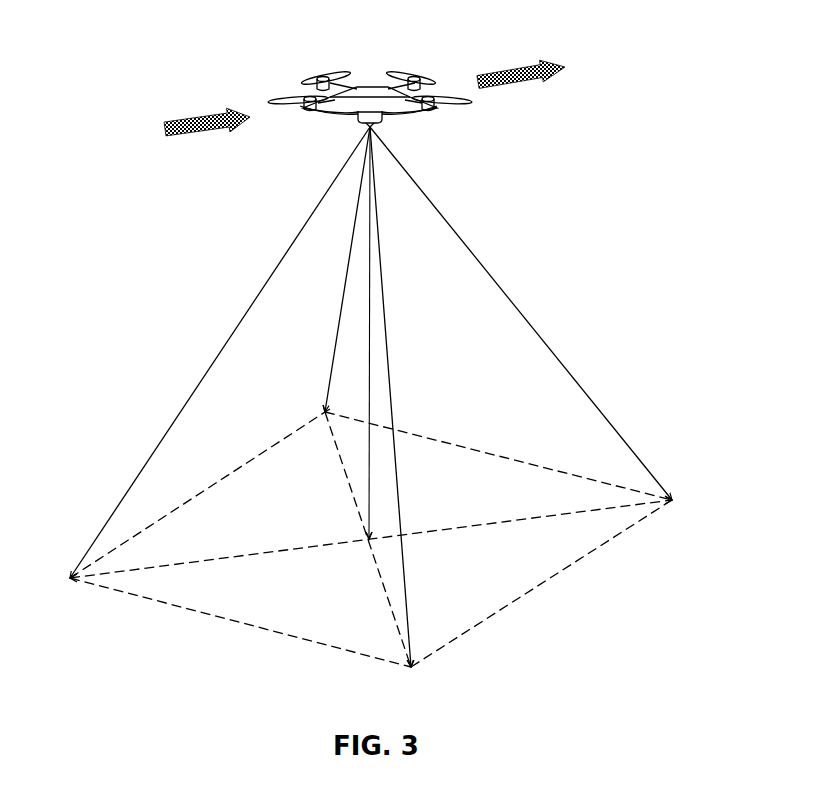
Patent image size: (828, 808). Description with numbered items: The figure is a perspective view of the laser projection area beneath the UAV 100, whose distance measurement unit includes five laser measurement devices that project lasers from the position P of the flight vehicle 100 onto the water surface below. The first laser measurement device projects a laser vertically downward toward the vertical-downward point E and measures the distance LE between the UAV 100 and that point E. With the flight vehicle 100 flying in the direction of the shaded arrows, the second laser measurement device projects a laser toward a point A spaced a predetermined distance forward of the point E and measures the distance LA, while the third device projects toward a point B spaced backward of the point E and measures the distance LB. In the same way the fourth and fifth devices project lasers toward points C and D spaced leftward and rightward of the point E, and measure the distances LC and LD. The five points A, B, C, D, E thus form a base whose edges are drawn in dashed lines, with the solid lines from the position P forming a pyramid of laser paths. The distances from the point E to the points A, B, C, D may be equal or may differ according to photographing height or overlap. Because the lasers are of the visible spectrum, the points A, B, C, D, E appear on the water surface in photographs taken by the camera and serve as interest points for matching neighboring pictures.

The unmanned aerial vehicle 100 is at (372, 86).
The position of the UAV P is at (356, 134).
The point A is at (679, 499).
The point B is at (63, 580).
The point C is at (319, 399).
The point D is at (417, 678).
The vertical-downward point E is at (361, 551).
The distance to point A LA is at (521, 313).
The distance to point B LB is at (220, 352).
The distance to point C LC is at (340, 269).
The distance to point D LD is at (391, 397).
The distance to vertical-downward point LE is at (371, 385).